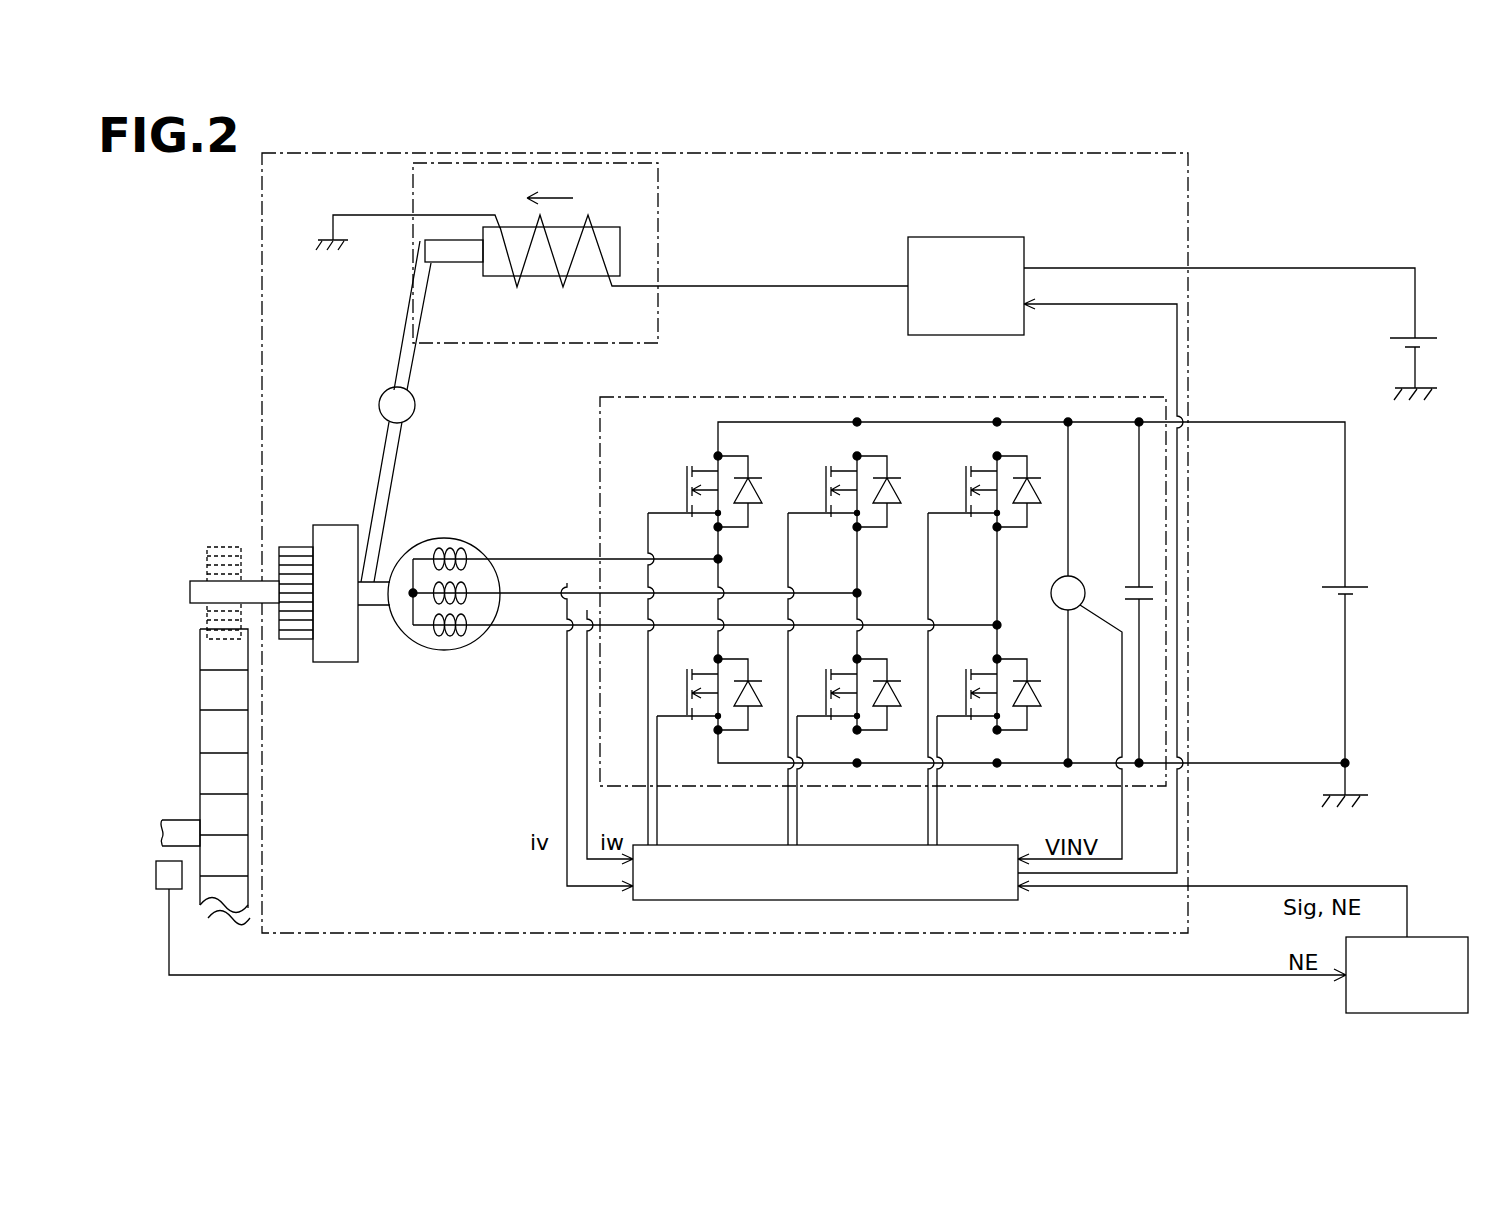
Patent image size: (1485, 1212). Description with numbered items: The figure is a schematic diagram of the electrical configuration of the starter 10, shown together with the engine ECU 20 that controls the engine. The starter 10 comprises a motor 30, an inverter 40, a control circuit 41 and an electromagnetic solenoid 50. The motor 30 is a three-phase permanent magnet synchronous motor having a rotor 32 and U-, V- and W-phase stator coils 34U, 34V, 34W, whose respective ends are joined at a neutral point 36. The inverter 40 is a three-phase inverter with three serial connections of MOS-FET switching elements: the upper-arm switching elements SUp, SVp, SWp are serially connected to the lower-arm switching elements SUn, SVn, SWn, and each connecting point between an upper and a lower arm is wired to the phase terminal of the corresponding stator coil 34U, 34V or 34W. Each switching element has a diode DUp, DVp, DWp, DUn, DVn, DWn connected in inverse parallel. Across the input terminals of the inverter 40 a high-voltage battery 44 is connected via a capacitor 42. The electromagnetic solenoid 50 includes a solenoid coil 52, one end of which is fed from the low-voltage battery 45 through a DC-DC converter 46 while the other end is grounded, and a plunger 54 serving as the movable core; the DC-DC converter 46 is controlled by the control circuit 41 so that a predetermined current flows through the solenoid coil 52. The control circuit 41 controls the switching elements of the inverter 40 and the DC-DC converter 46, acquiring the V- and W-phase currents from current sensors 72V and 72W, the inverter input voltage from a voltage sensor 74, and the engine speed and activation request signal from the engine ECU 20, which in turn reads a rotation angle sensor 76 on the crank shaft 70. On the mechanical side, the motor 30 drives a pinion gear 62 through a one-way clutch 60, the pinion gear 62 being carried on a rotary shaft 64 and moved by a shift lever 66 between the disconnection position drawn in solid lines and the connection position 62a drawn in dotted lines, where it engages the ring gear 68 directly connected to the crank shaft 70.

The starter 10 is at (1188, 168).
The engine ECU 20 is at (1439, 937).
The motor 30 is at (449, 634).
The rotor 32 is at (418, 648).
The U-phase stator coil 34U is at (445, 548).
The V-phase stator coil 34V is at (466, 603).
The W-phase stator coil 34W is at (450, 636).
The neutral point 36 is at (412, 598).
The inverter 40 is at (974, 598).
The control circuit 41 is at (990, 845).
The capacitor 42 is at (1132, 585).
The high-voltage battery 44 is at (1333, 586).
The low-voltage battery 45 is at (1397, 338).
The DC-DC converter 46 is at (1000, 237).
The electromagnetic solenoid 50 is at (612, 253).
The solenoid coil 52 is at (497, 218).
The plunger 54 is at (483, 268).
The one-way clutch 60 is at (340, 525).
The pinion gear 62 is at (283, 546).
The connection position 62a is at (222, 546).
The rotary shaft 64 is at (195, 580).
The shift lever 66 is at (398, 445).
The ring gear 68 is at (198, 697).
The crank shaft 70 is at (180, 820).
The V-phase current sensor 72V is at (565, 582).
The W-phase current sensor 72W is at (587, 610).
The voltage sensor 74 is at (1053, 585).
The rotation angle sensor 76 is at (157, 875).
The U-phase upper-arm switching element SUp is at (687, 469).
The U-phase upper-arm diode DUp is at (750, 469).
The V-phase upper-arm switching element SVp is at (826, 469).
The V-phase upper-arm diode DVp is at (889, 469).
The W-phase upper-arm switching element SWp is at (966, 469).
The W-phase upper-arm diode DWp is at (1029, 469).
The U-phase lower-arm switching element SUn is at (687, 672).
The U-phase lower-arm diode DUn is at (750, 672).
The V-phase lower-arm switching element SVn is at (826, 672).
The V-phase lower-arm diode DVn is at (889, 672).
The W-phase lower-arm switching element SWn is at (966, 672).
The W-phase lower-arm diode DWn is at (1029, 672).